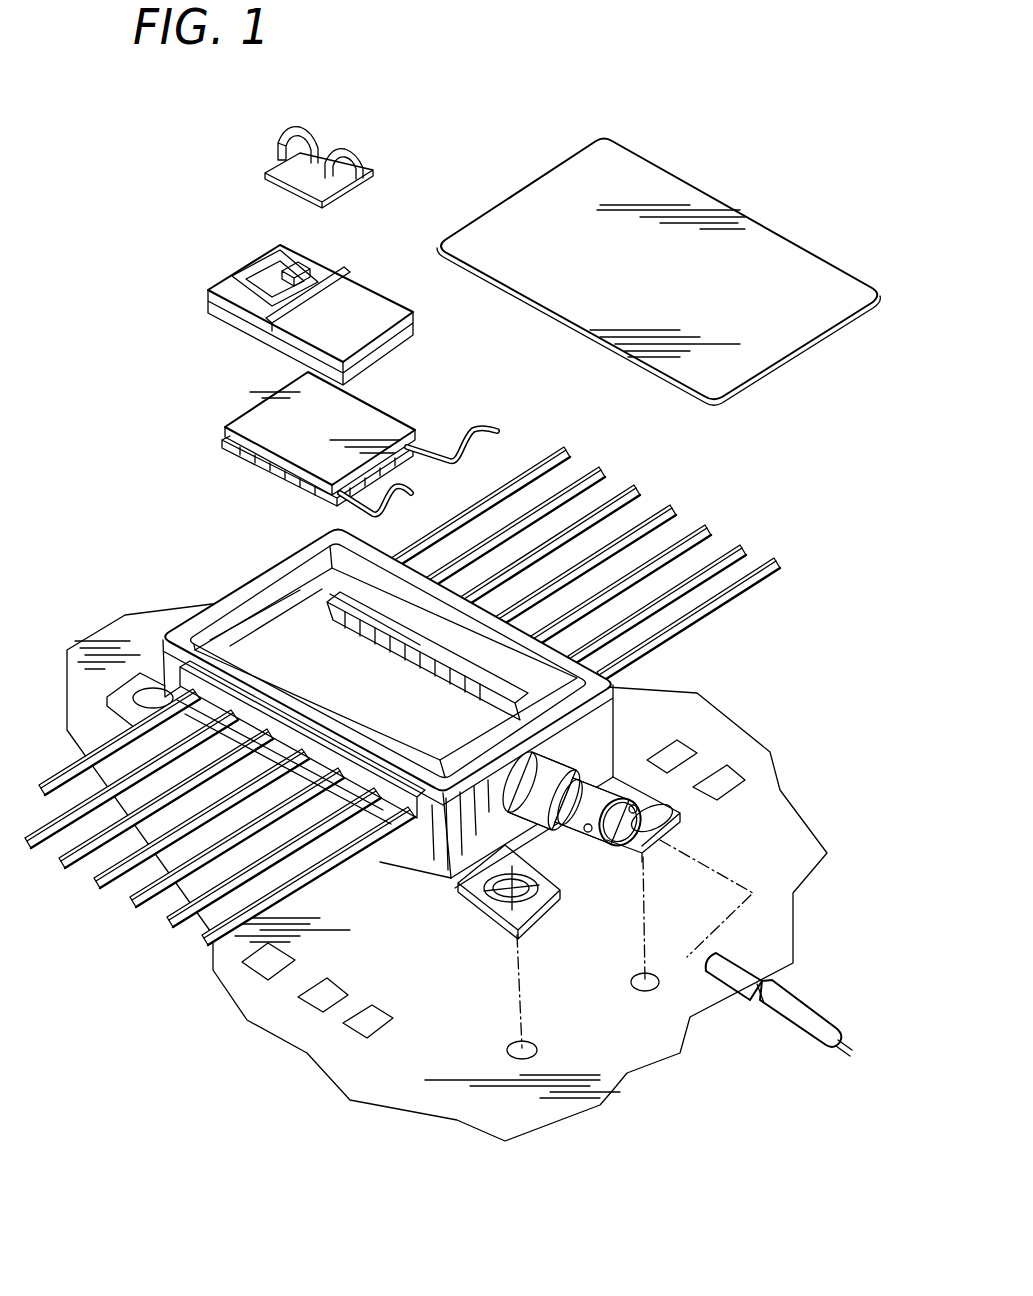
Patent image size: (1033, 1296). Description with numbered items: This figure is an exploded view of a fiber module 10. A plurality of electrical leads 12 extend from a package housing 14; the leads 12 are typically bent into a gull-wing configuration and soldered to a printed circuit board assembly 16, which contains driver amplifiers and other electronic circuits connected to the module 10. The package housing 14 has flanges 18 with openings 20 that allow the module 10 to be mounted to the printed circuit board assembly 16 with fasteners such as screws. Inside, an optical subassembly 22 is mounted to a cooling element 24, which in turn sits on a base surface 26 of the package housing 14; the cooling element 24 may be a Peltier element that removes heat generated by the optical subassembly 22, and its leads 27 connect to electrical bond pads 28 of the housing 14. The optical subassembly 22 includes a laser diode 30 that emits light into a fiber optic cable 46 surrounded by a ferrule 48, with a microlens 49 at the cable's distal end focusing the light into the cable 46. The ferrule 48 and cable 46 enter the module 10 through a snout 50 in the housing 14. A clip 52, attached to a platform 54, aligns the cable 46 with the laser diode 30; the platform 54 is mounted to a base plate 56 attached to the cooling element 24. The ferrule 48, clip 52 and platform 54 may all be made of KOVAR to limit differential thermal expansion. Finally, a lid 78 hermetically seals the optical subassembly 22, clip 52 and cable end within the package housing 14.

The fiber module 10 is at (678, 488).
The electrical leads 12 is at (707, 582).
The package housing 14 is at (388, 709).
The printed circuit board assembly 16 is at (447, 872).
The flanges 18 is at (677, 822).
The openings 20 is at (490, 884).
The optical subassembly 22 is at (342, 296).
The cooling element 24 is at (250, 417).
The base surface 26 is at (385, 661).
The leads 27 is at (405, 498).
The electrical bond pads 28 is at (525, 700).
The laser diode 30 is at (293, 272).
The fiber optic cable 46 is at (761, 1012).
The ferrule 48 is at (742, 980).
The microlens 49 is at (734, 976).
The snout 50 is at (605, 782).
The clip 52 is at (352, 135).
The platform 54 is at (306, 290).
The base plate 56 is at (254, 331).
The lid 78 is at (658, 272).